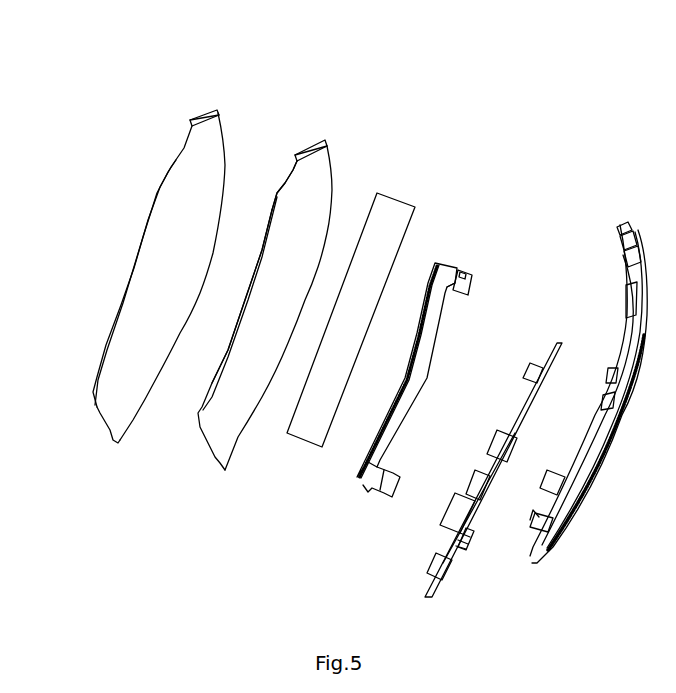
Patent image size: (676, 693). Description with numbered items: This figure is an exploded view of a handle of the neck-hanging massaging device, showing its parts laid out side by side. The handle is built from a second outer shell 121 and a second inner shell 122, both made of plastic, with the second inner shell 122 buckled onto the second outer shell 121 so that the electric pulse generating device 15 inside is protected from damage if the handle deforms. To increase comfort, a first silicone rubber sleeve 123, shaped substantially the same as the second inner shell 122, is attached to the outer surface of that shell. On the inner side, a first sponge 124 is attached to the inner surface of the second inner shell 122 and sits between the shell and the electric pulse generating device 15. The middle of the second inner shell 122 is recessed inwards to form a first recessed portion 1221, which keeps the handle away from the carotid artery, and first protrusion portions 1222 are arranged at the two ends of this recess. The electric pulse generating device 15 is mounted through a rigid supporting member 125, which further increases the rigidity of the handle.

The electric pulse generating device 15 is at (557, 343).
The second outer shell 121 is at (625, 308).
The second inner shell 122 is at (243, 397).
The first recessed portion 1221 is at (242, 297).
The first protrusion portions 1222 is at (277, 200).
The first silicone rubber sleeve 123 is at (160, 270).
The first sponge 124 is at (397, 203).
The rigid supporting member 125 is at (443, 268).